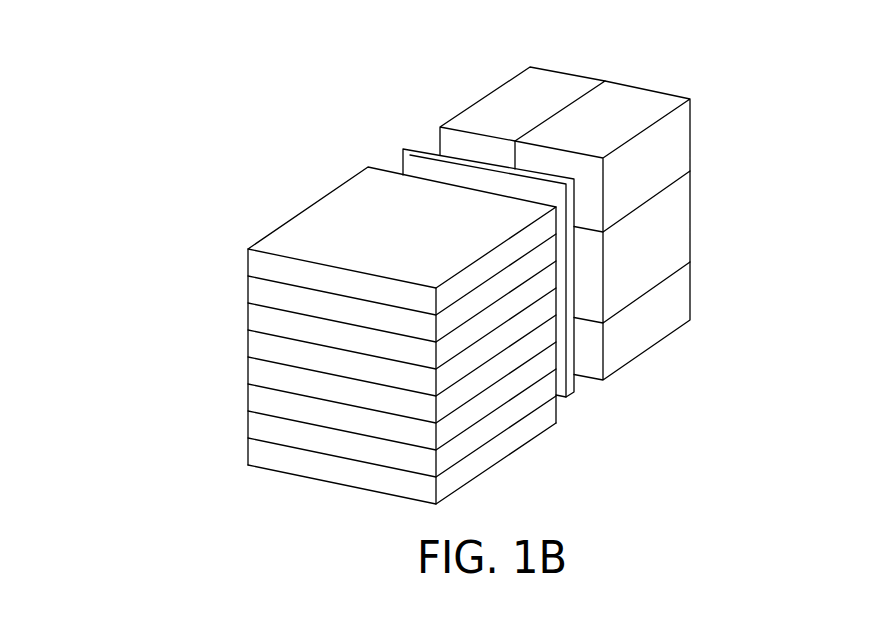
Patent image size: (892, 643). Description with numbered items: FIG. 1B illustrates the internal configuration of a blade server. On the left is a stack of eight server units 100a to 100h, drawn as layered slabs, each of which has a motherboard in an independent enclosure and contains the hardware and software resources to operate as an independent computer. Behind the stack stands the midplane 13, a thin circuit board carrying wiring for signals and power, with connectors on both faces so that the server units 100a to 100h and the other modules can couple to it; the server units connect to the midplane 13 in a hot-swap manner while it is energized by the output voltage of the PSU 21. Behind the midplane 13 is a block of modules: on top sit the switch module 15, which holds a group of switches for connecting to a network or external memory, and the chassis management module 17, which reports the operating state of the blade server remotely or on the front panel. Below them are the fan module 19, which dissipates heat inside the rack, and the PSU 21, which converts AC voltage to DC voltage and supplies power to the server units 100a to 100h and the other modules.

The server unit 100a is at (328, 217).
The server unit 100h is at (402, 450).
The midplane 13 is at (407, 146).
The switch module 15 is at (544, 78).
The chassis management module 17 is at (638, 100).
The fan module 19 is at (677, 232).
The PSU 21 is at (687, 307).